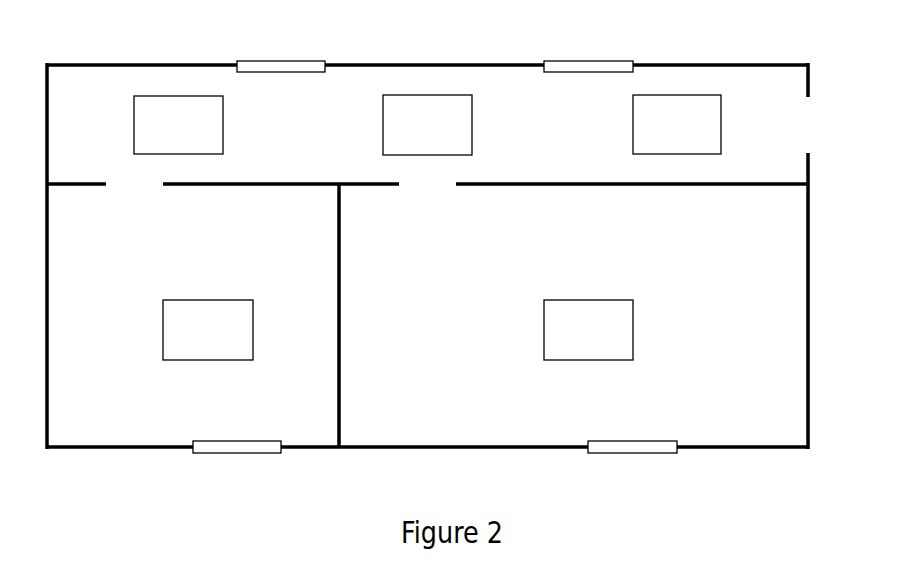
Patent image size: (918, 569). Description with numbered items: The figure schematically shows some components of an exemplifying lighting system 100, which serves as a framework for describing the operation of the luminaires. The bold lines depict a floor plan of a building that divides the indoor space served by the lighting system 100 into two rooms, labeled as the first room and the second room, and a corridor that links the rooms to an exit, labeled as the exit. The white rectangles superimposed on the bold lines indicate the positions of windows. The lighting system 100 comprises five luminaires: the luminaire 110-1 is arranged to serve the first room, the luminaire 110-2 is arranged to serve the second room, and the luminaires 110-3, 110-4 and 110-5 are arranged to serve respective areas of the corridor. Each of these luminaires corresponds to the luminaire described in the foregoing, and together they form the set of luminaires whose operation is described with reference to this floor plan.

The lighting system 100 is at (446, 32).
The luminaire 110-1 is at (208, 330).
The luminaire 110-2 is at (588, 330).
The luminaire 110-3 is at (178, 125).
The luminaire 110-4 is at (427, 125).
The luminaire 110-5 is at (677, 124).